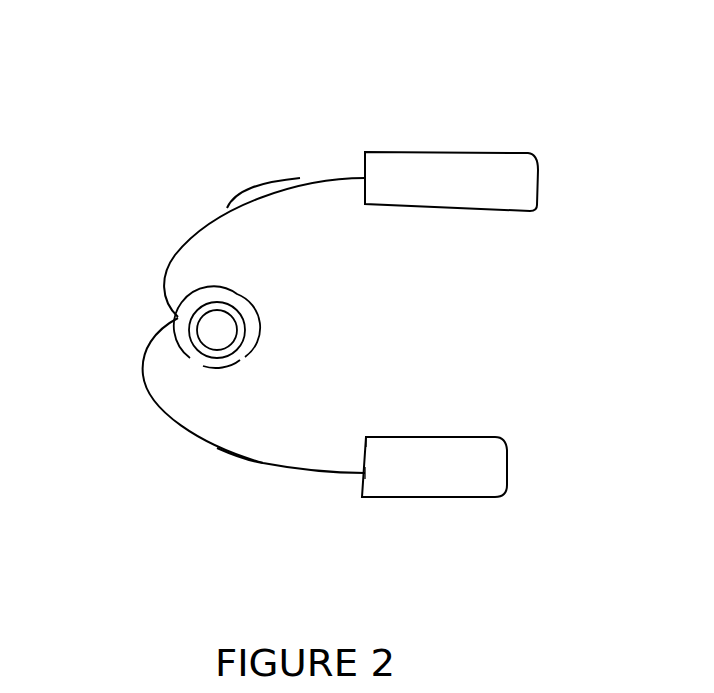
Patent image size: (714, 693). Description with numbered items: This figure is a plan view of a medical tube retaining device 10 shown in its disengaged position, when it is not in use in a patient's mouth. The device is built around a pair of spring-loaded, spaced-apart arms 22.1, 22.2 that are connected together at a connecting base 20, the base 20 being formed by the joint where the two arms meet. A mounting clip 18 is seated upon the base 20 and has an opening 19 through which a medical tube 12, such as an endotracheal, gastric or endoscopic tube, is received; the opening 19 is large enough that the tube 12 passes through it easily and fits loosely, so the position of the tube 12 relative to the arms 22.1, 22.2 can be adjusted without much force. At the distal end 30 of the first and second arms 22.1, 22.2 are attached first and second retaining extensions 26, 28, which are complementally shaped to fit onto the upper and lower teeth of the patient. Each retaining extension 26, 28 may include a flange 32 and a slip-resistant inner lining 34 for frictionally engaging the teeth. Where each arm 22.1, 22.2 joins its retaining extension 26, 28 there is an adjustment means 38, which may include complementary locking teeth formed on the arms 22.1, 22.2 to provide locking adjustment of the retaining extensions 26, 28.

The medical tube retaining device 10 is at (304, 276).
The medical tube 12 is at (243, 330).
The mounting clip 18 is at (220, 287).
The opening 19 is at (202, 364).
The base 20 is at (143, 302).
The first spaced-apart arm 22.1 is at (300, 178).
The second spaced-apart arm 22.2 is at (261, 468).
The first retaining extension 26 is at (490, 172).
The second retaining extension 28 is at (473, 475).
The distal end 30 is at (363, 450).
The flange 32 is at (357, 157).
The slip-resistant inner lining 34 is at (519, 464).
The adjustment means 38 is at (364, 180).